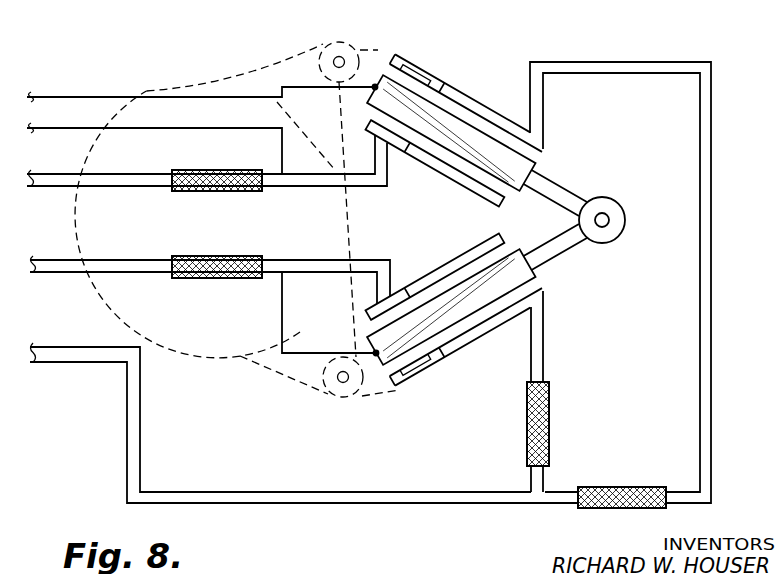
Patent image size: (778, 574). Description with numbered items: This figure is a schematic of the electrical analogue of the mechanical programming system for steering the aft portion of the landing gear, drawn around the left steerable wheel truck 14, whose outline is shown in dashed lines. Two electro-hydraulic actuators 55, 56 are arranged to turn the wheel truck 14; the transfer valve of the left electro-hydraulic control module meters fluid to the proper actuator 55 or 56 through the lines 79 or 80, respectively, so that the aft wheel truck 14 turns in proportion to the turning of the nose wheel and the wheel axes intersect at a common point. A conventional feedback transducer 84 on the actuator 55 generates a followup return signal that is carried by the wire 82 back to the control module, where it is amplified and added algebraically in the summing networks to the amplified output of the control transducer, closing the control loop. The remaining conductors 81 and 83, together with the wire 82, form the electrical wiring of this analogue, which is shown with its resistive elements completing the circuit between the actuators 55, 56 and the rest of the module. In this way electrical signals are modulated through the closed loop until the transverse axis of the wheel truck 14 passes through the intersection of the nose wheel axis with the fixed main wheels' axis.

The left steerable wheel truck 14 is at (212, 88).
The electro-hydraulic actuator 55 is at (460, 89).
The electro-hydraulic actuator 56 is at (427, 276).
The line 79 is at (70, 174).
The line 80 is at (66, 260).
The conductor loop with resistors 81 is at (73, 347).
The wire 82 is at (83, 97).
The lead wire 83 is at (88, 129).
The feedback transducer 84 is at (375, 80).